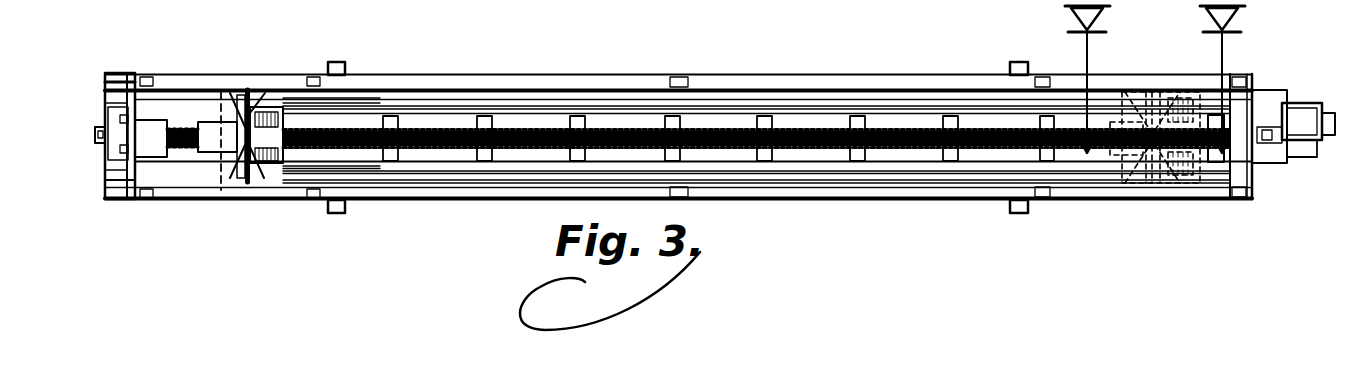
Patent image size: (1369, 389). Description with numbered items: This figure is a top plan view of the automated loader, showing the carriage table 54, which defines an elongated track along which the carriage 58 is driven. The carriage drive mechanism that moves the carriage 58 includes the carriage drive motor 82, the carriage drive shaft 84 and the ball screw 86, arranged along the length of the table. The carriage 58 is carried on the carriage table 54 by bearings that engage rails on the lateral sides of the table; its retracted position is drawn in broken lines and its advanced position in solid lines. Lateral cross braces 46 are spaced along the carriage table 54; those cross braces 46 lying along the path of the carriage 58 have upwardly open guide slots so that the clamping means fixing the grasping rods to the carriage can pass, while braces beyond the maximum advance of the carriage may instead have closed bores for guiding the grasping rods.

The lateral cross braces 46 is at (487, 152).
The carriage table 54 is at (212, 193).
The carriage 58 is at (229, 91).
The carriage drive motor 82 is at (1296, 117).
The carriage drive shaft 84 is at (533, 152).
The ball screw 86 is at (220, 197).